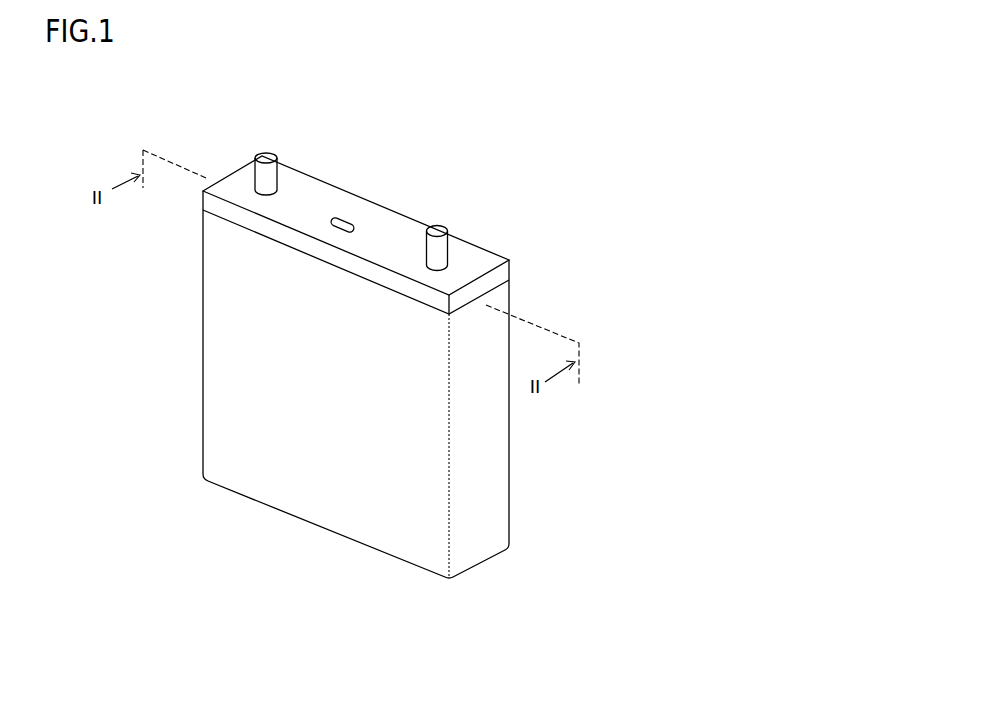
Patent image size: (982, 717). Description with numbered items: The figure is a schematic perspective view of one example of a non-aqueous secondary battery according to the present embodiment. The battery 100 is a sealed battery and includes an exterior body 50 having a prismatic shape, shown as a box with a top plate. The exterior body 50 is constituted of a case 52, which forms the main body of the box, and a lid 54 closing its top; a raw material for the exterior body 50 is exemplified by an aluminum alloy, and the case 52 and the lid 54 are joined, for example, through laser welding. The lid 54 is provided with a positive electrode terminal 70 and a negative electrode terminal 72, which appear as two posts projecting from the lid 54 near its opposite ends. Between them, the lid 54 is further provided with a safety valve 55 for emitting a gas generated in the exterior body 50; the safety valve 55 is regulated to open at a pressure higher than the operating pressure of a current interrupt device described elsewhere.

The battery 100 is at (646, 112).
The exterior body 50 is at (324, 493).
The case 52 is at (501, 509).
The lid 54 is at (511, 272).
The safety valve 55 is at (339, 217).
The positive electrode terminal 70 is at (266, 153).
The negative electrode terminal 72 is at (440, 226).